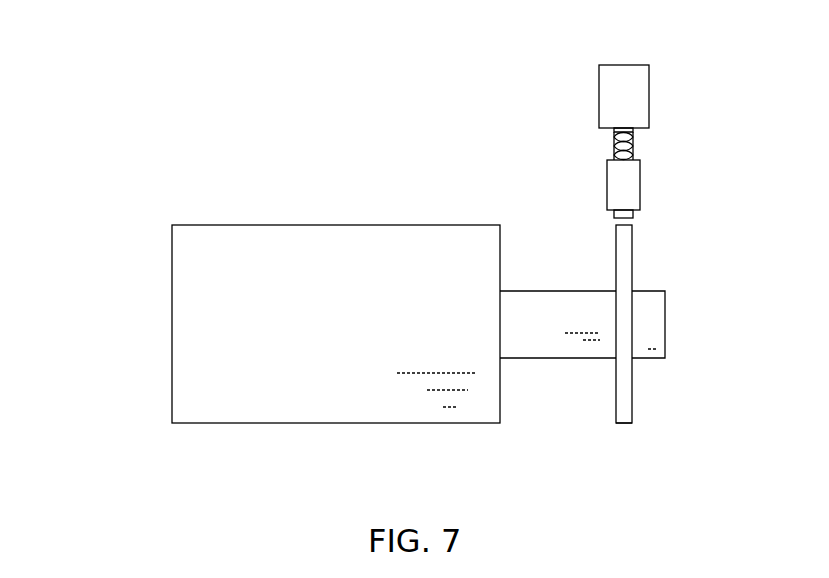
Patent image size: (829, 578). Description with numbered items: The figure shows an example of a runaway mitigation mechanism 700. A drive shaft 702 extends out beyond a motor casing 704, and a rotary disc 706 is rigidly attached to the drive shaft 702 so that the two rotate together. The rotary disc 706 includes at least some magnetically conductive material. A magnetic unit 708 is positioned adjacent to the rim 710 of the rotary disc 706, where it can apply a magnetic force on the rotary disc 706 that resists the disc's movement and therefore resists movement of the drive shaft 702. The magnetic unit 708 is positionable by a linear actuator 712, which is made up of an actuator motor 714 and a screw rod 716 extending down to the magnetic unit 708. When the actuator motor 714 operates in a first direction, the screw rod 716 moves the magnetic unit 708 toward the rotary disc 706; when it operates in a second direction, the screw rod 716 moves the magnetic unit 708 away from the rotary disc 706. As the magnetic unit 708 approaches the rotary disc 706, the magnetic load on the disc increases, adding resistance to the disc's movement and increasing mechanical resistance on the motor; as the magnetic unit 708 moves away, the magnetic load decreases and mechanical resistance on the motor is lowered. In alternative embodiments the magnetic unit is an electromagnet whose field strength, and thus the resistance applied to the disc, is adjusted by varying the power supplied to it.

The runaway mitigation mechanism 700 is at (82, 200).
The drive shaft 702 is at (550, 310).
The motor casing 704 is at (296, 260).
The rotary disc 706 is at (632, 398).
The magnetic unit 708 is at (641, 190).
The rim 710 is at (623, 425).
The linear actuator 712 is at (548, 100).
The actuator motor 714 is at (640, 105).
The screw rod 716 is at (633, 150).